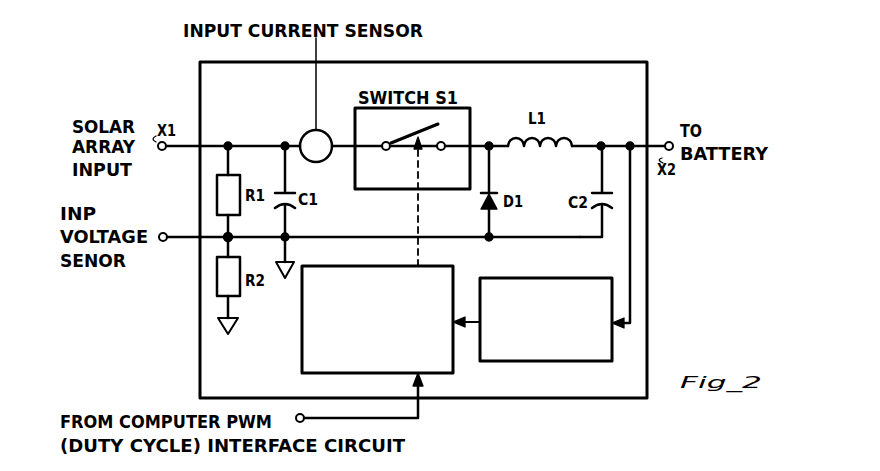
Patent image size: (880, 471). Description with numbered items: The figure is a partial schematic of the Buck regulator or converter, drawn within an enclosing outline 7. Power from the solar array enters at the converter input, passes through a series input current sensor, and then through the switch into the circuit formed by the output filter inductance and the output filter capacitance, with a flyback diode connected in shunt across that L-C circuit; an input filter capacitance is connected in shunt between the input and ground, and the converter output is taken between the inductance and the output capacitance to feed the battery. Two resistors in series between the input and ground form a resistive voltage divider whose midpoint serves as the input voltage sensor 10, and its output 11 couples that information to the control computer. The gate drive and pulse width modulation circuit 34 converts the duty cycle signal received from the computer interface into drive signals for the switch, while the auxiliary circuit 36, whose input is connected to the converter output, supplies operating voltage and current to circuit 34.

The power converter / charge controller housing 7 is at (551, 62).
The input voltage sensor 10 is at (233, 237).
The output 11 is at (166, 243).
The gate drive and pulse width modulation circuit 34 is at (431, 266).
The auxiliary circuit 36 is at (571, 278).